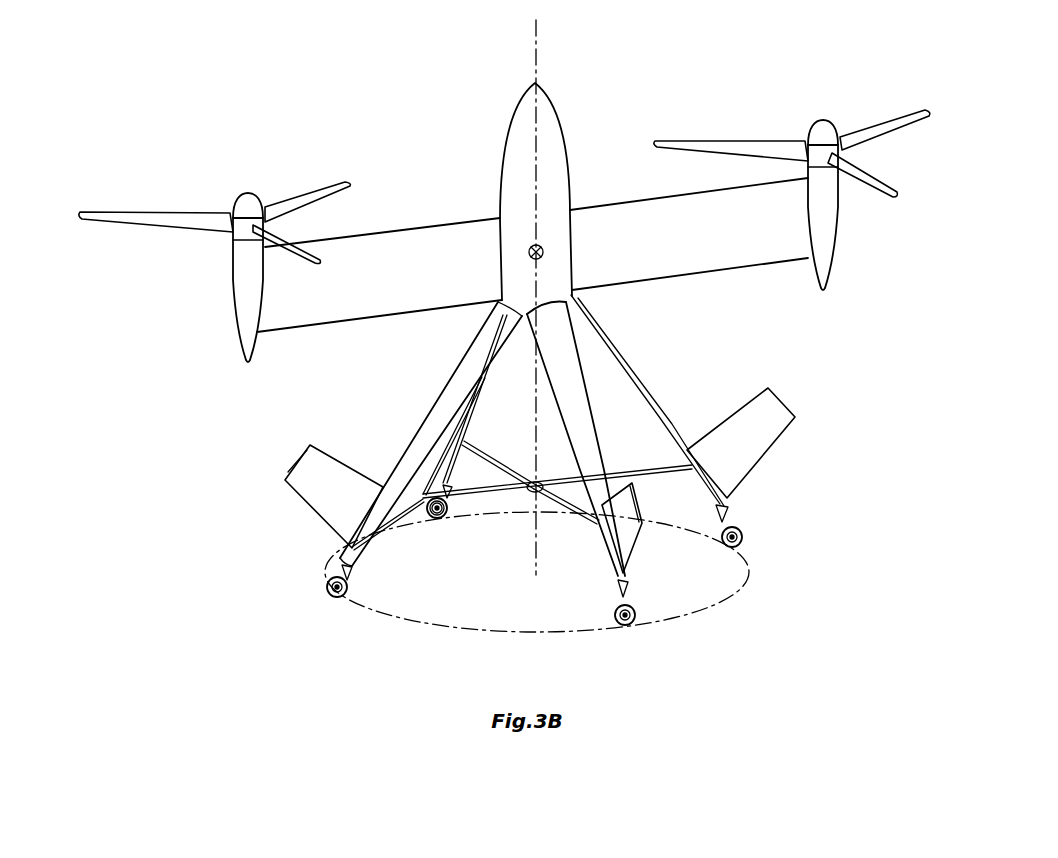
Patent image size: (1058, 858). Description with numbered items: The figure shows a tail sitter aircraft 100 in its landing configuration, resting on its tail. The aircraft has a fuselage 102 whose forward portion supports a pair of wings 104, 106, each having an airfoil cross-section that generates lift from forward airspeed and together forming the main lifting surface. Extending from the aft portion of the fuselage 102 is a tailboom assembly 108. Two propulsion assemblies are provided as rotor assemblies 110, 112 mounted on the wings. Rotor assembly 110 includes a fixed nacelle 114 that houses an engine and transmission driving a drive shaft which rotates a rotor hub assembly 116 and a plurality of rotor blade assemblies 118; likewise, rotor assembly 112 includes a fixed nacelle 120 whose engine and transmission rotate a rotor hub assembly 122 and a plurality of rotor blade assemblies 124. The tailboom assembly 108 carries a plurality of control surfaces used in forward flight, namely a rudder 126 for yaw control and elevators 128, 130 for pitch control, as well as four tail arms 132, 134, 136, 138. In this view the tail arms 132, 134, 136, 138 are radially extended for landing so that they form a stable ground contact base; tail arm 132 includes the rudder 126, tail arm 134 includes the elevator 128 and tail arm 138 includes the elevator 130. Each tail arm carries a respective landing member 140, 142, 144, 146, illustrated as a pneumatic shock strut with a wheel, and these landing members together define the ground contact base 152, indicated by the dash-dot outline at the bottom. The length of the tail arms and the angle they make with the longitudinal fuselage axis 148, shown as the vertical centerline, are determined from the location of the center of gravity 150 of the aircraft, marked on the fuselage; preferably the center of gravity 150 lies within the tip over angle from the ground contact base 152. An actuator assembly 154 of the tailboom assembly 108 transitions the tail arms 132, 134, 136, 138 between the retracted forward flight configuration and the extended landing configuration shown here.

The tail sitter aircraft 100 is at (587, 105).
The fuselage 102 is at (517, 150).
The wing 104 is at (432, 240).
The wing 106 is at (612, 220).
The tailboom assembly 108 is at (532, 470).
The rotor assembly 110 is at (215, 243).
The rotor assembly 112 is at (793, 170).
The fixed nacelle 114 is at (240, 265).
The rotor hub assembly 116 is at (238, 228).
The rotor blade assemblies 118 is at (308, 195).
The fixed nacelle 120 is at (835, 205).
The rotor hub assembly 122 is at (812, 158).
The rotor blade assemblies 124 is at (886, 115).
The rudder 126 is at (628, 540).
The elevator 128 is at (762, 440).
The elevator 130 is at (310, 497).
The tail arm 132 is at (570, 402).
The tail arm 134 is at (655, 402).
The tail arm 136 is at (472, 437).
The tail arm 138 is at (425, 432).
The landing member 140 is at (635, 622).
The landing member 142 is at (745, 530).
The landing member 144 is at (447, 516).
The landing member 146 is at (325, 591).
The longitudinal fuselage axis 148 is at (535, 48).
The center of gravity 150 is at (528, 258).
The ground contact base 152 is at (432, 628).
The actuator assembly 154 is at (431, 522).